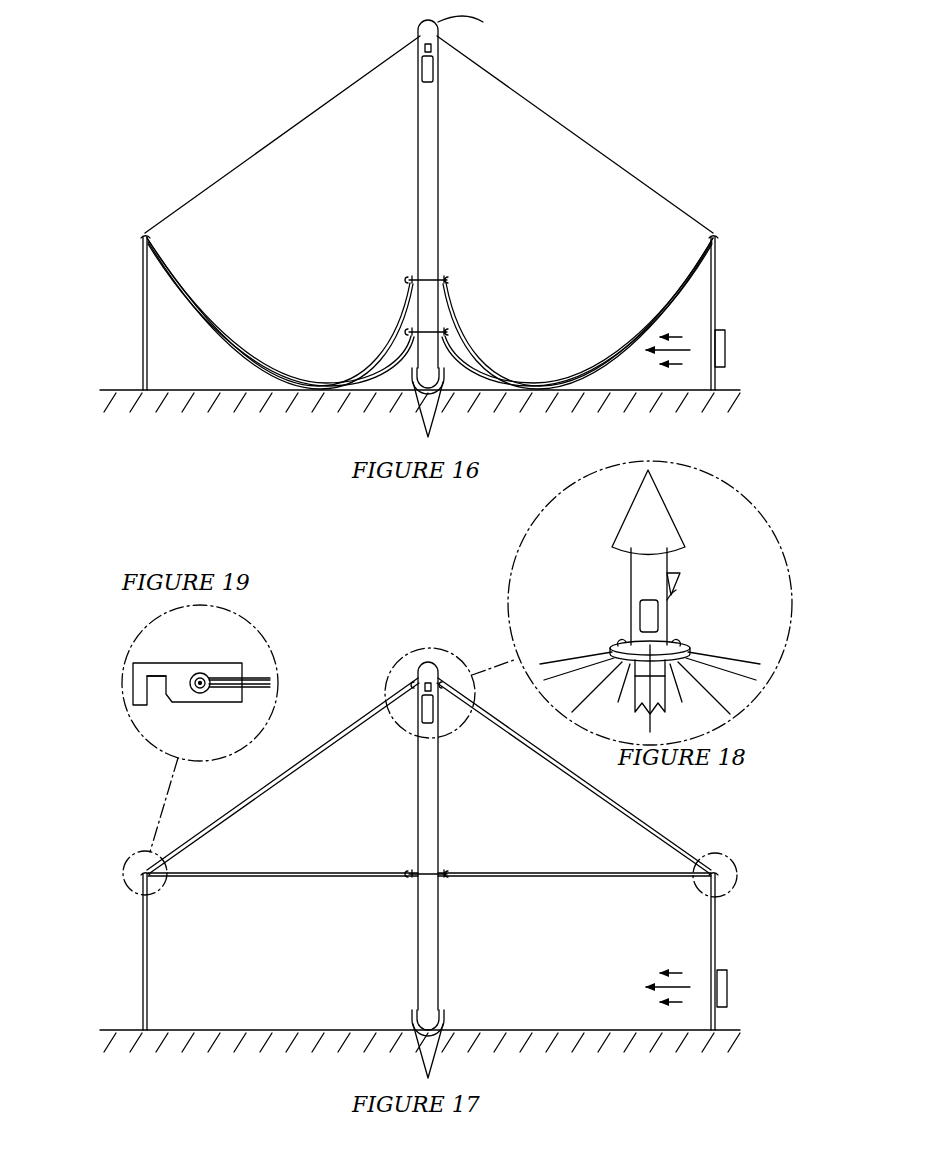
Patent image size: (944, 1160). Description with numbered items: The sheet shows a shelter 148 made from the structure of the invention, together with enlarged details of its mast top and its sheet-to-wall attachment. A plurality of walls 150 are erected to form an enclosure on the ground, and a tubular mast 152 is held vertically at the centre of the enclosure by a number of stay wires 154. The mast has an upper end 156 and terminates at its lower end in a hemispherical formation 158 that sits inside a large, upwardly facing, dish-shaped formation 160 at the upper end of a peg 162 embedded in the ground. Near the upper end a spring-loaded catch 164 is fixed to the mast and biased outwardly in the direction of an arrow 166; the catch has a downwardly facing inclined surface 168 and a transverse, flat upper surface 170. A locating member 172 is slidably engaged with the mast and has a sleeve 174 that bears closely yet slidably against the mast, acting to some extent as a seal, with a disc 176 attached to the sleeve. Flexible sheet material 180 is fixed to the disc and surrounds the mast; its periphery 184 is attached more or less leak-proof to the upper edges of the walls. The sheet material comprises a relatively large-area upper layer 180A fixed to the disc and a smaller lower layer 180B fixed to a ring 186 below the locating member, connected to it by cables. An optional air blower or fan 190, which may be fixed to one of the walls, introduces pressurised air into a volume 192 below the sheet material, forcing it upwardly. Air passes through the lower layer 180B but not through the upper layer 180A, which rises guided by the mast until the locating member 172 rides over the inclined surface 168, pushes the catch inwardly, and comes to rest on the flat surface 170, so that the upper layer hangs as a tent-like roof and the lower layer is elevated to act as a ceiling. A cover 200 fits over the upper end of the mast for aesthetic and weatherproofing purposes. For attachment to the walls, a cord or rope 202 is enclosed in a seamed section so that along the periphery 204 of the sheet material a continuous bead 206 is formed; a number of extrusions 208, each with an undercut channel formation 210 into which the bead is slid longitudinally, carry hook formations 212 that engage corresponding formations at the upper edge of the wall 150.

In FIG. 16, the shelter 148 is at (242, 108).
In FIG. 17, the shelter 148 is at (390, 640).
In FIG. 16, the walls 150 is at (718, 274).
In FIG. 17, the walls 150 is at (718, 908).
In FIG. 16, the mast 152 is at (438, 180).
In FIG. 17, the mast 152 is at (438, 832).
In FIG. 16, the stay wires 154 is at (611, 160).
In FIG. 16, the upper end 156 is at (481, 32).
In FIG. 17, the hemispherical formation 158 is at (435, 1012).
In FIG. 17, the dish-shaped formation 160 is at (440, 1040).
In FIG. 16, the peg 162 is at (413, 418).
In FIG. 18, the catch 164 is at (682, 583).
In FIG. 18, the arrow 166 is at (700, 566).
In FIG. 18, the inclined surface 168 is at (676, 590).
In FIG. 18, the flat upper surface 170 is at (671, 590).
In FIG. 18, the locating member 172 is at (612, 594).
In FIG. 18, the sleeve 174 is at (628, 688).
In FIG. 16, the disc 176 is at (448, 279).
In FIG. 18, the disc 176 is at (690, 642).
In FIG. 16, the flexible sheet material 180 is at (430, 343).
In FIG. 16, the upper layer 180A is at (490, 360).
In FIG. 19, the upper layer 180A is at (253, 694).
In FIG. 16, the lower layer 180B is at (487, 385).
In FIG. 19, the lower layer 180B is at (265, 676).
In FIG. 17, the lower layer 180B is at (605, 877).
In FIG. 16, the periphery 184 is at (720, 224).
In FIG. 16, the ring 186 is at (448, 331).
In FIG. 17, the ring 186 is at (446, 880).
In FIG. 16, the air blower or fan 190 is at (728, 350).
In FIG. 17, the air blower or fan 190 is at (728, 990).
In FIG. 16, the volume 192 is at (188, 368).
In FIG. 18, the cover 200 is at (668, 500).
In FIG. 19, the cord or rope 202 is at (200, 672).
In FIG. 19, the periphery 204 is at (160, 655).
In FIG. 19, the bead 206 is at (192, 696).
In FIG. 19, the extrusion 208 is at (128, 668).
In FIG. 19, the undercut channel formation 210 is at (166, 704).
In FIG. 19, the hook formations 212 is at (133, 696).